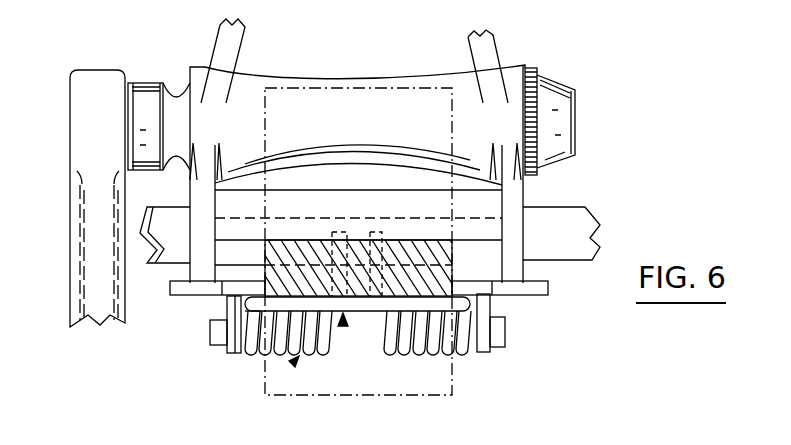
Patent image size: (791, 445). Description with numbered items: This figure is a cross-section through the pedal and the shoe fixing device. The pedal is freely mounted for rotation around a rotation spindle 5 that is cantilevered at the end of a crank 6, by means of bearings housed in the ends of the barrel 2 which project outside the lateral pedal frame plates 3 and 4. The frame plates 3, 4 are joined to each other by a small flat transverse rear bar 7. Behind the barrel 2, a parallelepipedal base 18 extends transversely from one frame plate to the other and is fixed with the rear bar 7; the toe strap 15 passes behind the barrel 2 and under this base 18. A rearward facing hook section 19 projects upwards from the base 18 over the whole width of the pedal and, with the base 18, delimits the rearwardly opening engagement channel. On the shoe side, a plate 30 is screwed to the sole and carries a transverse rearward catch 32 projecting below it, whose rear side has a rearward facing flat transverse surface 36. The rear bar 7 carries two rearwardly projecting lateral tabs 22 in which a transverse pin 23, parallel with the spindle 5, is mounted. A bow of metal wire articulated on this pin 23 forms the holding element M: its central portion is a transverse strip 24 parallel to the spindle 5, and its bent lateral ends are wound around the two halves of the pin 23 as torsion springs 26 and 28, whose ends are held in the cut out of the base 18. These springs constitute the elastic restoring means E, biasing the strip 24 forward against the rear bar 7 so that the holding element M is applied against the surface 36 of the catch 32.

The barrel 2 is at (250, 83).
The lateral pedal frame plate 3 is at (223, 50).
The lateral pedal frame plate 4 is at (485, 50).
The rotation spindle 5 is at (145, 107).
The crank 6 is at (97, 260).
The rear bar 7 is at (540, 288).
The toe strap 15 is at (567, 223).
The base 18 is at (483, 263).
The hook section 19 is at (480, 228).
The lateral tab 22 is at (483, 307).
The transverse pin 23 is at (498, 335).
The transverse strip 24 is at (355, 305).
The torsion spring 26 is at (283, 343).
The torsion spring 28 is at (420, 347).
The plate 30 is at (452, 382).
The rearward catch 32 is at (285, 265).
The rearward facing flat transverse surface 36 is at (278, 317).
The elastic restoring means E is at (293, 363).
The holding element M is at (343, 325).